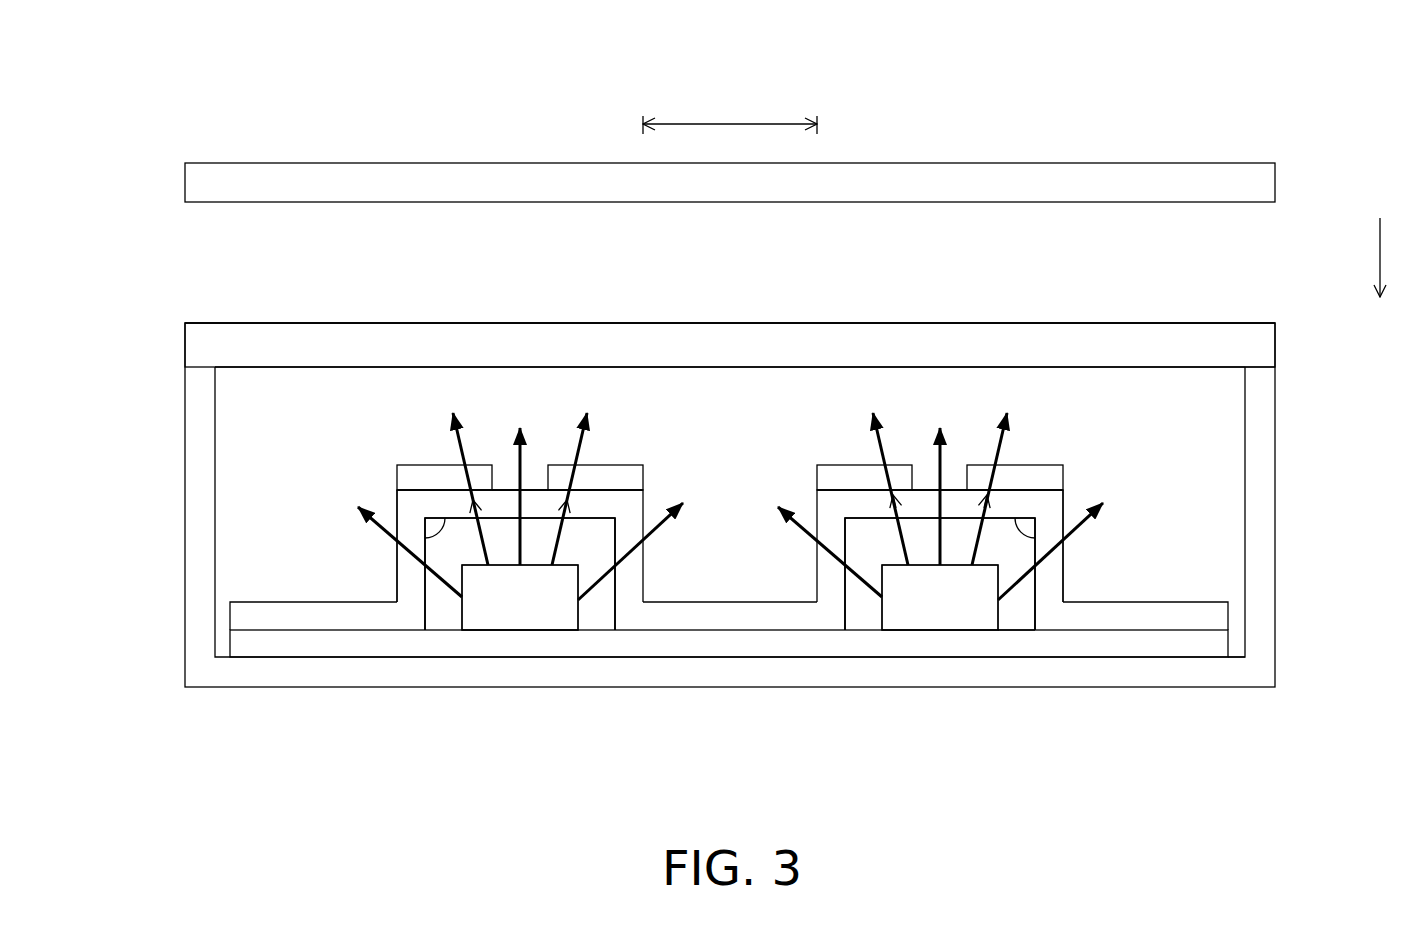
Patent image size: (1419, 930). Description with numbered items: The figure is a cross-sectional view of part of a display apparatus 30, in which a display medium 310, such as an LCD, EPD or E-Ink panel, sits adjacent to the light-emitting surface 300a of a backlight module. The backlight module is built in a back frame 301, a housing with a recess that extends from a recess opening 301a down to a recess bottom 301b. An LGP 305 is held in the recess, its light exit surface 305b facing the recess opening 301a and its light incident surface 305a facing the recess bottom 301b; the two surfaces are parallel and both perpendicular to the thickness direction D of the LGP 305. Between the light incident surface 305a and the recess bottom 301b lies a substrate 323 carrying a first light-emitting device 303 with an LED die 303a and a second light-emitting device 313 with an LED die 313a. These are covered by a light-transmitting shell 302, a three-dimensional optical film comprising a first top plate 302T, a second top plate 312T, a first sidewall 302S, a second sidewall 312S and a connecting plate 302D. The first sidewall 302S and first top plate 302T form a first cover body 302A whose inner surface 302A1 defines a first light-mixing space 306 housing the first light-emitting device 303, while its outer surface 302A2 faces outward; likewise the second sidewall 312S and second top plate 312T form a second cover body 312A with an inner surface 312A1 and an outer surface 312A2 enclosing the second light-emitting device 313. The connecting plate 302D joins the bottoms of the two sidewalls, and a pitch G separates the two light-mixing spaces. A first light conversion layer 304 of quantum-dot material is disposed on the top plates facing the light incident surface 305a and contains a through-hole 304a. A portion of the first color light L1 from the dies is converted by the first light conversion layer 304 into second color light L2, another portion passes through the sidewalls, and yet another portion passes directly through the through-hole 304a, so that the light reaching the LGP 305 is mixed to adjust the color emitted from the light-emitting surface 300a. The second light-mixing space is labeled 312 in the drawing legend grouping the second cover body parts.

The display apparatus 30 is at (93, 57).
The display medium 310 is at (1255, 175).
The light-emitting surface 300a is at (1228, 240).
The light exit surface 305b is at (1200, 323).
The LGP 305 is at (1125, 359).
The light incident surface 305a is at (1200, 367).
The back frame 301 is at (1258, 578).
The recess opening 301a is at (1247, 365).
The recess bottom 301b is at (1240, 655).
The substrate 323 is at (1202, 645).
The connecting plate 302D is at (302, 620).
The first reflector 312 is at (1182, 748).
The second top plate 312T is at (615, 488).
The second sidewall 312S is at (397, 508).
The second cover body 312A is at (1327, 835).
The inner surface 312A1 is at (597, 520).
The outer surface 312A2 is at (425, 490).
The second light-emitting device 313 is at (1052, 833).
The LED die 313a is at (532, 610).
The first light conversion layer 304 is at (478, 477).
The through-hole 304a is at (535, 465).
The light-transmitting shell 302 is at (1182, 833).
The first top plate 302T is at (1045, 488).
The first sidewall 302S is at (1063, 552).
The first cover body 302A is at (1327, 748).
The inner surface 302A1 is at (1214, 650).
The outer surface 302A2 is at (1119, 672).
The first light-emitting device 303 is at (1052, 748).
The LED die 303a is at (947, 610).
The first light-mixing space 306 is at (1018, 605).
The first color light L1 is at (727, 500).
The second color light L2 is at (727, 474).
The pitch G is at (730, 113).
The thickness direction D is at (1392, 257).